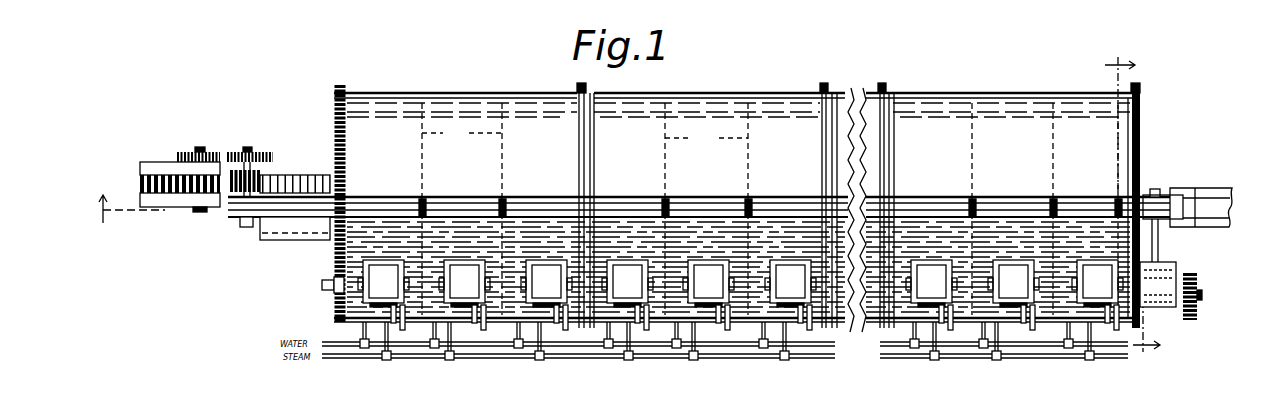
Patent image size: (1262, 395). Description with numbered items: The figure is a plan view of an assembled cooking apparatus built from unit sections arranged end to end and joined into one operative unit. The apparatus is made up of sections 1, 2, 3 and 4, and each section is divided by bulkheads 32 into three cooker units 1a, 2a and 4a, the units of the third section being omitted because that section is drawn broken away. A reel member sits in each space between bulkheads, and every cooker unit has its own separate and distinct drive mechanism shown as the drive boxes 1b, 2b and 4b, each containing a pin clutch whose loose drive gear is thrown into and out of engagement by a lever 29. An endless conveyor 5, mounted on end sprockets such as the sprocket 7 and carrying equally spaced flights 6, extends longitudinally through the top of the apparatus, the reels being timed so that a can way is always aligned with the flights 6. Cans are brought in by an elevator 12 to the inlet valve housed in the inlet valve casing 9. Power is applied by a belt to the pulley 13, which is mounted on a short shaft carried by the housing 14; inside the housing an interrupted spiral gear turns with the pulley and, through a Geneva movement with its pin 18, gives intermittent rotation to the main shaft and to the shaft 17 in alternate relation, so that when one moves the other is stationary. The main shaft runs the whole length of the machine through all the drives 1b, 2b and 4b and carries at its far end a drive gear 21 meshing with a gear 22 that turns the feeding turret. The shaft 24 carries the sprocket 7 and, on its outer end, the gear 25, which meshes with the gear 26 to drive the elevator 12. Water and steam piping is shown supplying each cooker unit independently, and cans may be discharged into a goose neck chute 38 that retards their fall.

The section 1 is at (477, 90).
The section 2 is at (705, 92).
The section 3 is at (848, 90).
The section 4 is at (1002, 90).
The endless conveyor 5 is at (372, 199).
The flights 6 is at (426, 206).
The end sprocket 7 is at (243, 218).
The inlet valve casing 9 is at (292, 233).
The elevator 12 is at (168, 145).
The pulley 13 is at (1198, 281).
The housing 14 is at (1170, 264).
The shaft 17 is at (1160, 243).
The pin 18 is at (1158, 196).
The drive gear 21 is at (330, 297).
The gear 22 is at (319, 173).
The shaft 24 is at (250, 167).
The gear 25 is at (256, 152).
The gear 26 is at (213, 152).
The lever 29 is at (472, 321).
The bulkheads 32 is at (585, 139).
The goose neck chute 38 is at (1192, 196).
The cooker units 1a is at (467, 209).
The cooker units 2a is at (706, 209).
The cooker units 4a is at (1024, 209).
The drive mechanism 1b is at (465, 283).
The drive mechanism 2b is at (709, 283).
The drive mechanism 4b is at (1014, 283).